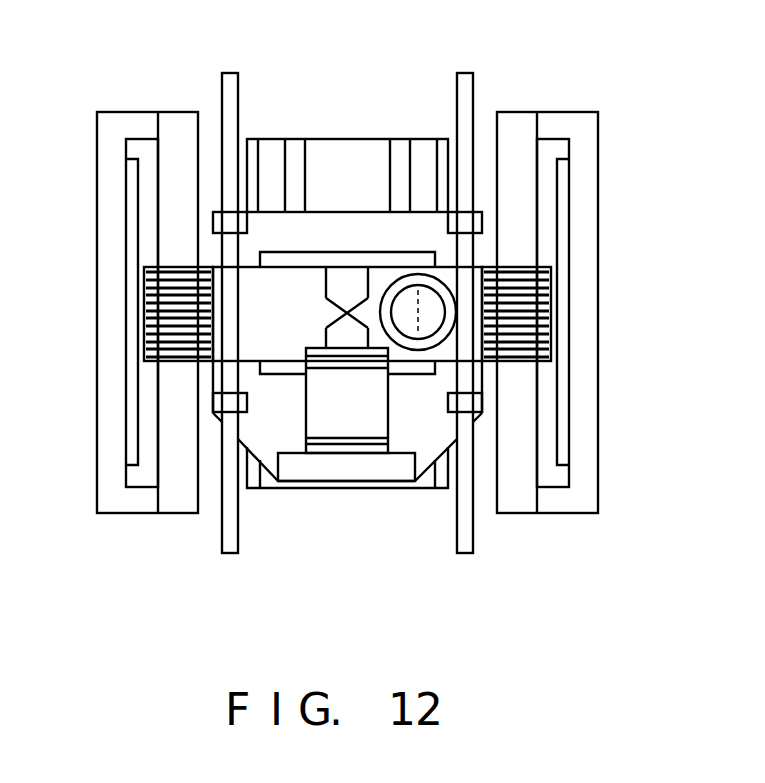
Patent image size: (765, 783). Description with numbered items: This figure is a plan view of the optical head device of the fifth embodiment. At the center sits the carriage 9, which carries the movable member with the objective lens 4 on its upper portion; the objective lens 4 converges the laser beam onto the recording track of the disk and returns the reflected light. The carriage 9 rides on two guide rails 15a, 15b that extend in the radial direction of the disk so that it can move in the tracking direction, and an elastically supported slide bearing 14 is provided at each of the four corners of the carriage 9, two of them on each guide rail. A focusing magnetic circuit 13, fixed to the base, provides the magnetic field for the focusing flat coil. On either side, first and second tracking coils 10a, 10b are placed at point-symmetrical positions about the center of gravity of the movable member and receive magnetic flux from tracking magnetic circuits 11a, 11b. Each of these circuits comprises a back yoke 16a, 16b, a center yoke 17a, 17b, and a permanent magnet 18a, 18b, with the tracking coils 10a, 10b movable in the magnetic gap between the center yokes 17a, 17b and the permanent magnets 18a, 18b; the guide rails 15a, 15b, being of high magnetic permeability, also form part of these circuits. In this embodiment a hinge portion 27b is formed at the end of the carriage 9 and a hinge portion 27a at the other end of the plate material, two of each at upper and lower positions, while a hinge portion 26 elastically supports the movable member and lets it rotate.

The tracking magnetic circuit 11b is at (167, 95).
The tracking magnetic circuit 11a is at (571, 93).
The guide rail 15b is at (233, 92).
The guide rail 15a is at (472, 90).
The focusing magnetic circuit 13 is at (357, 148).
The slide bearing 14 is at (212, 220).
The back yoke 16b is at (112, 250).
The back yoke 16a is at (583, 250).
The second tracking coil 10b is at (160, 296).
The first tracking coil 10a is at (533, 305).
The permanent magnet 18b is at (133, 345).
The permanent magnet 18a is at (562, 345).
The center yoke 17b is at (177, 505).
The center yoke 17a is at (522, 505).
The hinge portion 26 is at (350, 312).
The objective lens 4 is at (418, 300).
The hinge portion 27a is at (327, 358).
The hinge portion 27b is at (347, 448).
The carriage 9 is at (385, 472).